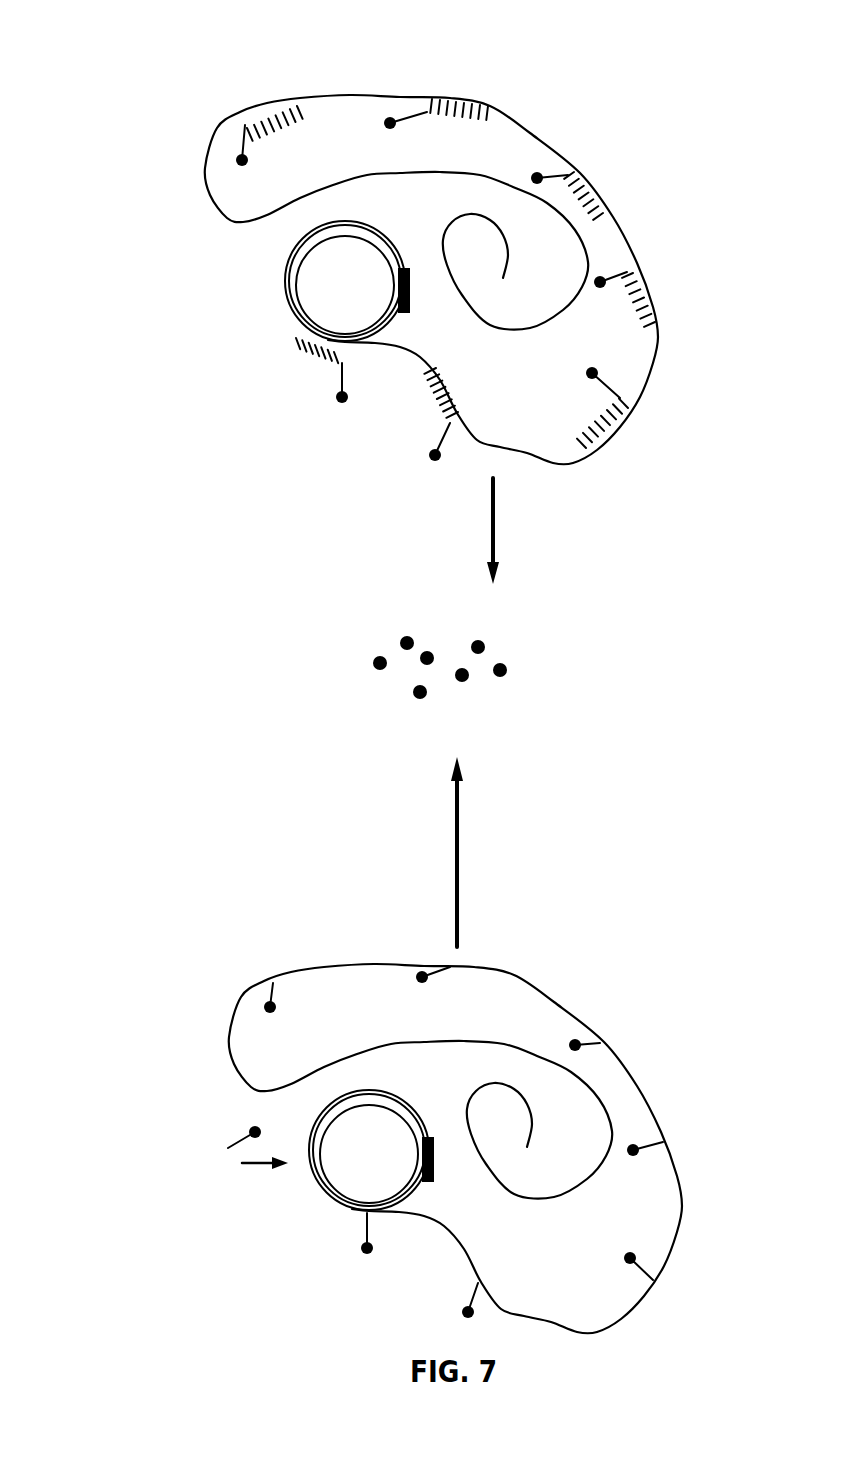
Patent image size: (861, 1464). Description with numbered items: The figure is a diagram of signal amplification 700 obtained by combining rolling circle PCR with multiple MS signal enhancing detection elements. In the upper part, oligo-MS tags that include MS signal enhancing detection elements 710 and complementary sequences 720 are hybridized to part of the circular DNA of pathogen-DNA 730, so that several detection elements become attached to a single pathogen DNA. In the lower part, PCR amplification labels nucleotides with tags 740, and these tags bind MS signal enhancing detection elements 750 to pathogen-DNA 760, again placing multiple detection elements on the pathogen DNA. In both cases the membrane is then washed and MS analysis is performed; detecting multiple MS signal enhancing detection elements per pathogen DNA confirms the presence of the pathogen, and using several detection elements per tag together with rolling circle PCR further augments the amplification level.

The signal amplification 700 is at (192, 1298).
The MS signal enhancing detection elements 710 is at (340, 398).
The complementary sequences 720 is at (292, 345).
The pathogen-DNA 730 is at (372, 95).
The tags 740 is at (240, 1140).
The MS signal enhancing detection elements 750 is at (258, 1131).
The pathogen-DNA 760 is at (345, 967).